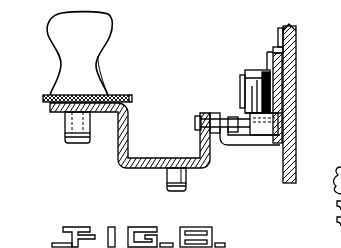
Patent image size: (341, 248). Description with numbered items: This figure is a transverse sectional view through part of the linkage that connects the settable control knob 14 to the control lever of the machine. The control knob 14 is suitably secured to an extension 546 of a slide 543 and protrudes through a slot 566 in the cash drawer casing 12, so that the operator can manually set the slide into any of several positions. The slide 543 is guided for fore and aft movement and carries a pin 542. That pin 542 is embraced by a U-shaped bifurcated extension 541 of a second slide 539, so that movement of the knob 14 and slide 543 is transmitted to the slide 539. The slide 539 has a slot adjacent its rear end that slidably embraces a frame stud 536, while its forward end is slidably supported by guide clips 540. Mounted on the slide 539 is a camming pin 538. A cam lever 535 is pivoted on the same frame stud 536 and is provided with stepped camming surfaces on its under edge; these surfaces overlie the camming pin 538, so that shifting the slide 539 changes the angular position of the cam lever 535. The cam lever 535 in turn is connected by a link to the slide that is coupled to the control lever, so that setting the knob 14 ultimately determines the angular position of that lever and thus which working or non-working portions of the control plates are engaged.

The settable knob 14 is at (105, 25).
The slot 566 is at (77, 97).
The cash drawer casing 12 is at (134, 85).
The extension 546 is at (118, 161).
The slide 543 is at (195, 167).
The pin 542 is at (217, 113).
The U-shaped bifurcated extension 541 is at (247, 142).
The camming pin 538 is at (234, 110).
The frame stud 536 is at (243, 73).
The cam lever 535 is at (258, 70).
The slide 539 is at (277, 116).
The guide clips 540 is at (284, 24).